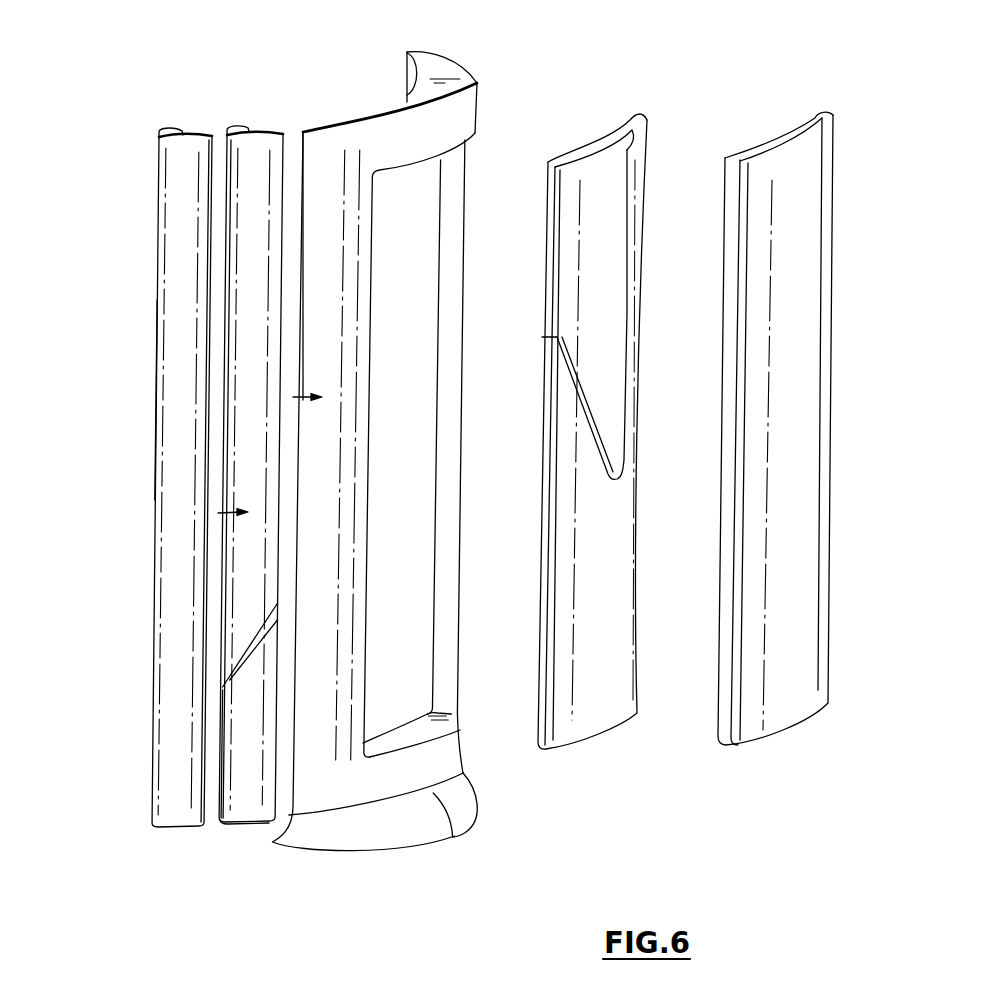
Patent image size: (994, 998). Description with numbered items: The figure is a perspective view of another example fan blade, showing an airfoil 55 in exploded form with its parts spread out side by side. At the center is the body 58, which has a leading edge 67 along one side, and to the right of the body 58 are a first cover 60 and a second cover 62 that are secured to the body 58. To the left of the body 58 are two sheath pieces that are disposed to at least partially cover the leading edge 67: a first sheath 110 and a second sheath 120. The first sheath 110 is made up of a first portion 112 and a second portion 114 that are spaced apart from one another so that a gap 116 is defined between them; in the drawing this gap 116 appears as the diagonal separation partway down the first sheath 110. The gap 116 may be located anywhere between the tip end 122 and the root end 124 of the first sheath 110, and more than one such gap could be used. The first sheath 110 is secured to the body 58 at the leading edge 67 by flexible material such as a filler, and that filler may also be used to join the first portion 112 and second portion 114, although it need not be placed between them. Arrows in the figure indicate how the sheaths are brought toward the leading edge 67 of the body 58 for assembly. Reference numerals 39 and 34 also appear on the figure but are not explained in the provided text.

The second sheath 120 is at (136, 89).
The first sheath 110 is at (210, 486).
The first portion 112 is at (284, 212).
The tip end 122 is at (244, 126).
The gap 116 is at (220, 688).
The second portion 114 is at (248, 783).
The root end 124 is at (248, 824).
The airfoil 55 is at (373, 445).
The leading edge 67 is at (328, 150).
The top flange 39 is at (408, 107).
The body 58 is at (328, 593).
The base 34 is at (453, 840).
The first cover 60 is at (598, 125).
The second cover 62 is at (778, 115).